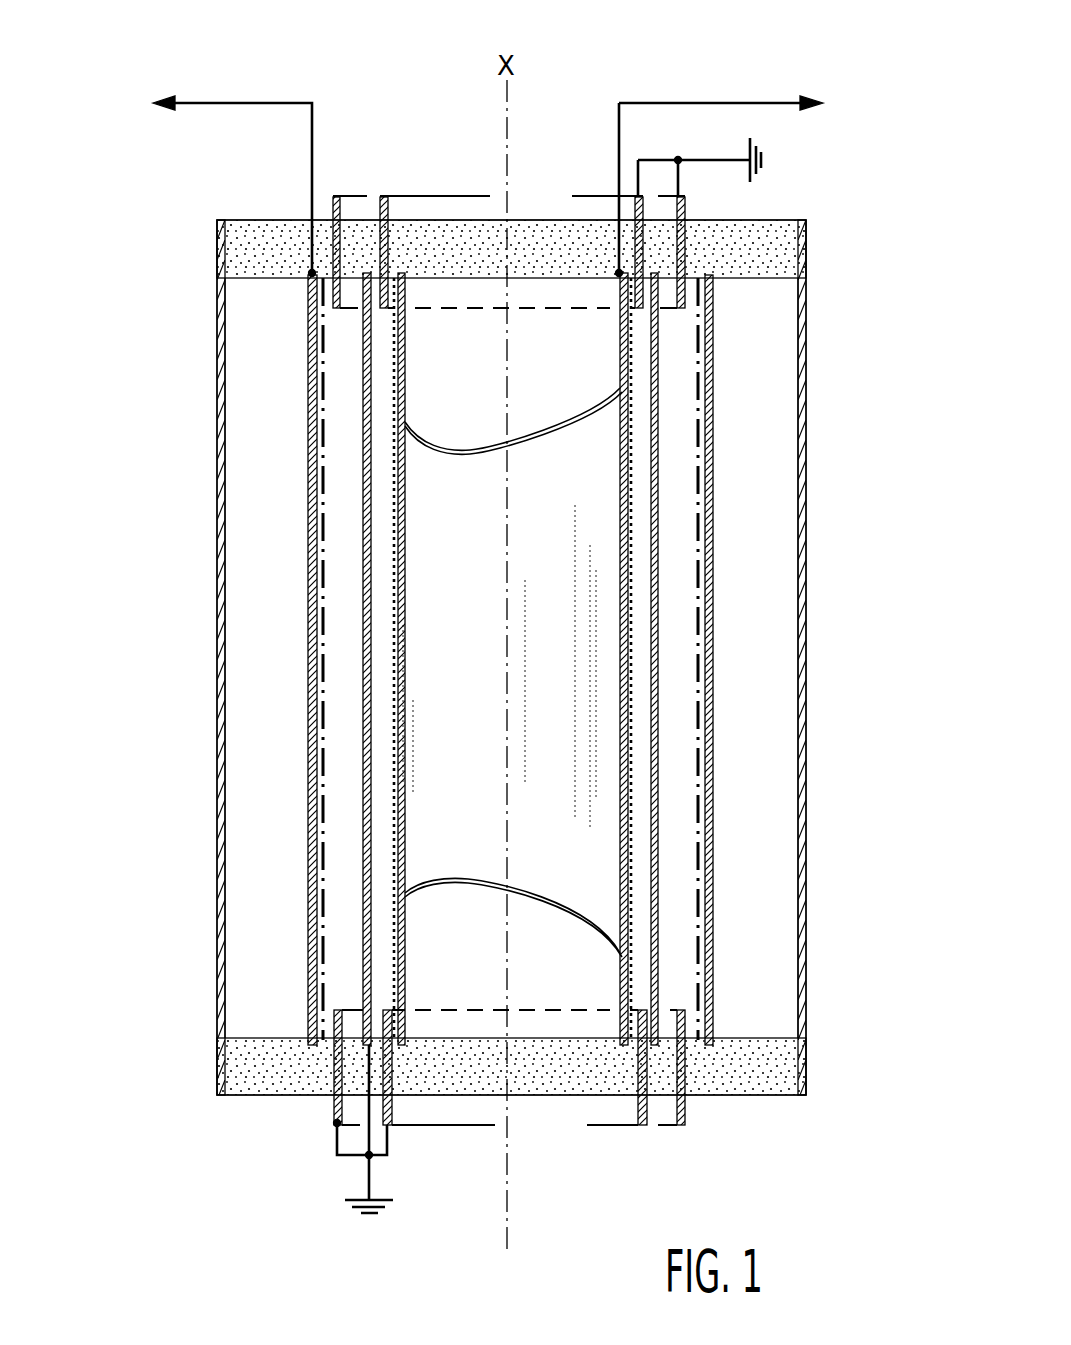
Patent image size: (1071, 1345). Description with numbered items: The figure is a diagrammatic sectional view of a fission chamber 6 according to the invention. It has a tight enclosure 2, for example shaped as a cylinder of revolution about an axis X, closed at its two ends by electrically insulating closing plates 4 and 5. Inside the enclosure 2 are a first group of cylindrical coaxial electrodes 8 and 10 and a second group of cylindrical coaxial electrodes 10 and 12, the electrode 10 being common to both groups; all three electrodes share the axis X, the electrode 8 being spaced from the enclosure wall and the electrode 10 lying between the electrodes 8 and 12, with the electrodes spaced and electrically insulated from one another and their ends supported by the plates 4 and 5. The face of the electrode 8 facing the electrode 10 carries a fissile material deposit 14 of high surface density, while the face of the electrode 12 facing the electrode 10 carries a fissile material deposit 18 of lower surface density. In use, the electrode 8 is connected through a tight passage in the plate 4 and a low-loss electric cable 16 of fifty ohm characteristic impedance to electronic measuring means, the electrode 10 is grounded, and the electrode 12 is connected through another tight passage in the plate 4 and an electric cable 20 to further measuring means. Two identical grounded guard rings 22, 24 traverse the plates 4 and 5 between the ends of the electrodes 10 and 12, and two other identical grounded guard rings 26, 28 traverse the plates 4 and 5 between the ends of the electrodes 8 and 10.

The tight enclosure 2 is at (220, 815).
The closing plate 4 is at (265, 236).
The closing plate 5 is at (272, 1077).
The fission chamber 6 is at (188, 493).
The electrode 8 is at (310, 384).
The electrode 10 is at (367, 793).
The electrode 12 is at (407, 584).
The fissile material deposit 14 is at (340, 478).
The electric cable 16 is at (215, 103).
The fissile material deposit 18 is at (397, 663).
The electric cable 20 is at (745, 103).
The guard ring 22 is at (385, 195).
The guard ring 24 is at (640, 1125).
The guard ring 26 is at (337, 195).
The guard ring 28 is at (686, 1115).